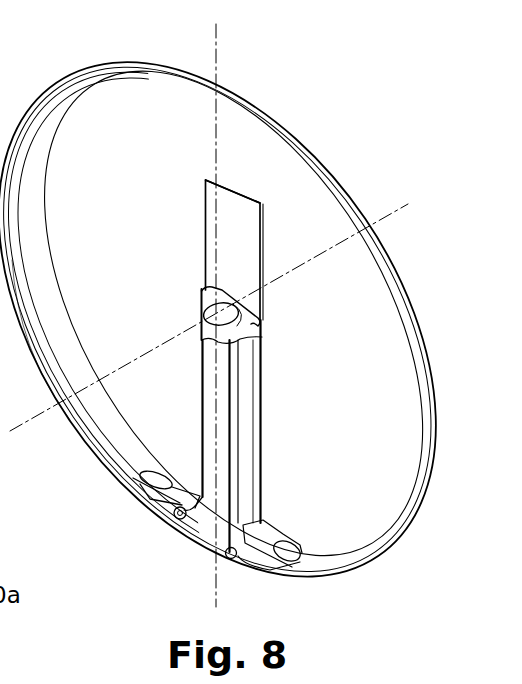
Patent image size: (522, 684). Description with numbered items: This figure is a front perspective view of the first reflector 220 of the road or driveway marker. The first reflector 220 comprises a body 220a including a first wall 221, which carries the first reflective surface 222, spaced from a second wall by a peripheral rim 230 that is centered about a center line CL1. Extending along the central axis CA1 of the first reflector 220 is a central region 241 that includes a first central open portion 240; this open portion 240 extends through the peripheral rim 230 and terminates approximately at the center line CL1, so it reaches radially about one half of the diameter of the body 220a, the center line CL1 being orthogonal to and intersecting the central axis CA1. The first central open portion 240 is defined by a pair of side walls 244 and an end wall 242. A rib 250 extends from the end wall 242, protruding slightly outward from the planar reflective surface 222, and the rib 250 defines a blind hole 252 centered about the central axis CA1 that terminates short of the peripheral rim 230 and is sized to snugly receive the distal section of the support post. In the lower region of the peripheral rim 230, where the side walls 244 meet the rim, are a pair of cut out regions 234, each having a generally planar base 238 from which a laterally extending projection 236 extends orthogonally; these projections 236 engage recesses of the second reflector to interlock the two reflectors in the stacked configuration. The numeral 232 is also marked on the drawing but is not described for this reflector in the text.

The first reflector 220 is at (294, 93).
The body 220a is at (282, 175).
The first wall 221 is at (373, 465).
The first reflective surface 222 is at (360, 502).
The peripheral rim 230 is at (88, 412).
The mounting foot block 232 is at (147, 515).
The cut out regions 234 is at (185, 490).
The laterally extending projection 236 is at (188, 512).
The base 238 is at (147, 478).
The first central open portion 240 is at (206, 550).
The central region 241 is at (237, 155).
The end wall 242 is at (262, 337).
The side walls 244 is at (205, 432).
The rib 250 is at (236, 268).
The blind hole 252 is at (198, 320).
The central axis CA1 is at (215, 34).
The center line CL1 is at (394, 211).